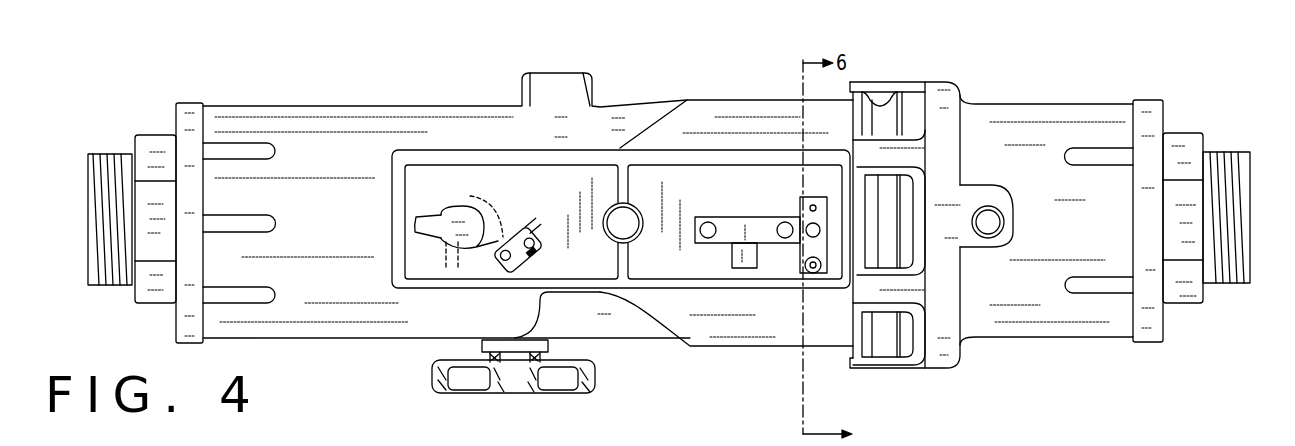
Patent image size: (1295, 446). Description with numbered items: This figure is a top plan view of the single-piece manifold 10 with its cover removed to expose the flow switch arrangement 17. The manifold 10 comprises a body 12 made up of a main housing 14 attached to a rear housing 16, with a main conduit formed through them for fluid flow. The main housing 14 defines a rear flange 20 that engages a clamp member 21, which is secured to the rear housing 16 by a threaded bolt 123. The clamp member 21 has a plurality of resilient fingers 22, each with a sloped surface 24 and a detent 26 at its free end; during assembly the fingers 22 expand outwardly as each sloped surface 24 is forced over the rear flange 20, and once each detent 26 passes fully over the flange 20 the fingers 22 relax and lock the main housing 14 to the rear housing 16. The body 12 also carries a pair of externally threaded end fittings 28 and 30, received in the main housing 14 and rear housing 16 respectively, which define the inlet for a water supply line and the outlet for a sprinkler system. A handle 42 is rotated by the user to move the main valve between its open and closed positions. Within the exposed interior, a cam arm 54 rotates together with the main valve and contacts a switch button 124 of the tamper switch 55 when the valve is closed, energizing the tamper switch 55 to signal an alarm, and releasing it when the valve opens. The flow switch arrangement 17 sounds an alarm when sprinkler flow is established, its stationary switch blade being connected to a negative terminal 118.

The single-piece manifold 10 is at (492, 89).
The body 12 is at (370, 338).
The main housing 14 is at (672, 101).
The rear housing 16 is at (1063, 104).
The flow switch arrangement 17 is at (747, 227).
The rear flange 20 is at (887, 243).
The clamp member 21 is at (960, 188).
The resilient fingers 22 is at (913, 85).
The sloped surface 24 is at (845, 97).
The detent 26 is at (887, 103).
The end fitting 28 is at (110, 152).
The end fitting 30 is at (1225, 152).
The handle 42 is at (558, 395).
The cam arm 54 is at (450, 207).
The tamper switch 55 is at (515, 250).
The negative terminal 118 is at (1090, 436).
The threaded bolt 123 is at (988, 222).
The switch button 124 is at (494, 238).